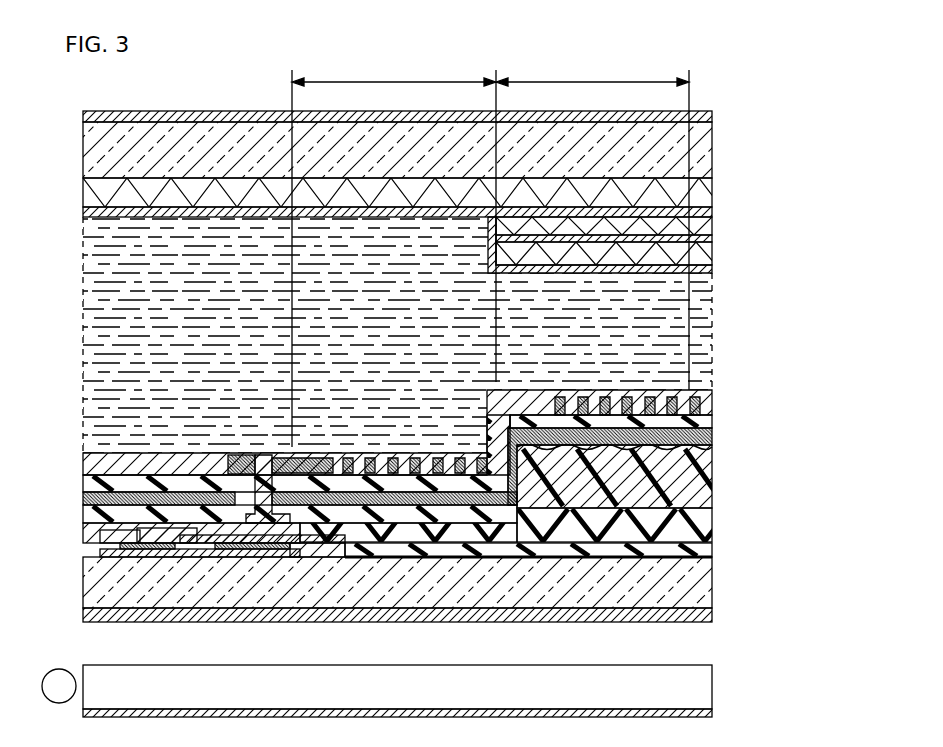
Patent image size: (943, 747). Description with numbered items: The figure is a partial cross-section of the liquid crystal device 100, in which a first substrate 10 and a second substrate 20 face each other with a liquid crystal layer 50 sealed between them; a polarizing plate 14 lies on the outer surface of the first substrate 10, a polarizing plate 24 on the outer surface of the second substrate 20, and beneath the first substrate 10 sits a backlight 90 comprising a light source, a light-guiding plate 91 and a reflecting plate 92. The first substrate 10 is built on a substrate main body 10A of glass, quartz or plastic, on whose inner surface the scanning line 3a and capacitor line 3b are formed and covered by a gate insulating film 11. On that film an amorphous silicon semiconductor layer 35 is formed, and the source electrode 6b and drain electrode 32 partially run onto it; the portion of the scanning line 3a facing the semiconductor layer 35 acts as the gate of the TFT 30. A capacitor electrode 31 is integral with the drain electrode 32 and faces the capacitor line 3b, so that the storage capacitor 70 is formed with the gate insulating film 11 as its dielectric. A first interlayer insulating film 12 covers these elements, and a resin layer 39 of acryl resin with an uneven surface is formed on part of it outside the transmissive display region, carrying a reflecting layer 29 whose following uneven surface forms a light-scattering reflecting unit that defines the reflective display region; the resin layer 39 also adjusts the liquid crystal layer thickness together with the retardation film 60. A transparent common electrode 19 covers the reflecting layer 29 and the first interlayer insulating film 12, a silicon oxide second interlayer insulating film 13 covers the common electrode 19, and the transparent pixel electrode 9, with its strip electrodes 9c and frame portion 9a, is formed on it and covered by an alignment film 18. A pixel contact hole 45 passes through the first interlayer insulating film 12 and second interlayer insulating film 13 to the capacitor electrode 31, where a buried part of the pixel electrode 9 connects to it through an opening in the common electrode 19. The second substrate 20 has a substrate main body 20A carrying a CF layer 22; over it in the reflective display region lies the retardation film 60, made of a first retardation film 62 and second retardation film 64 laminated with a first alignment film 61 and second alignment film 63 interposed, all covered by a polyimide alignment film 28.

The liquid crystal device 100 is at (735, 73).
The second substrate 20 is at (78, 112).
The polarizing plate 24 is at (712, 117).
The substrate main body 20A is at (712, 150).
The CF layer 22 is at (712, 190).
The retardation film 60 is at (806, 160).
The first alignment film 61 is at (712, 212).
The first retardation film 62 is at (712, 226).
The second alignment film 63 is at (712, 239).
The second retardation film 64 is at (712, 255).
The alignment film 28 is at (712, 272).
The liquid crystal layer 50 is at (714, 336).
The first substrate 10 is at (78, 452).
The alignment film 18 is at (712, 398).
The strip electrodes 9c is at (582, 400).
The reflecting layer 29 is at (604, 440).
The second interlayer insulating film 13 is at (712, 422).
The resin layer 39 is at (712, 480).
The pixel electrode 9 is at (410, 460).
The frame portion 9a is at (240, 462).
The pixel contact hole 45 is at (266, 468).
The common electrode 19 is at (186, 500).
The first interlayer insulating film 12 is at (712, 530).
The storage capacitor 70 is at (302, 520).
The TFT 30 is at (120, 562).
The semiconductor layer 35 is at (140, 548).
The scanning line 3a is at (160, 548).
The drain electrode 32 is at (205, 550).
The capacitor line 3b is at (275, 550).
The capacitor electrode 31 is at (290, 554).
The gate insulating film 11 is at (712, 553).
The substrate main body 10A is at (712, 585).
The polarizing plate 14 is at (712, 615).
The source electrode 6b is at (117, 538).
The backlight 90 is at (772, 668).
The light-guiding plate 91 is at (712, 690).
The reflecting plate 92 is at (712, 713).